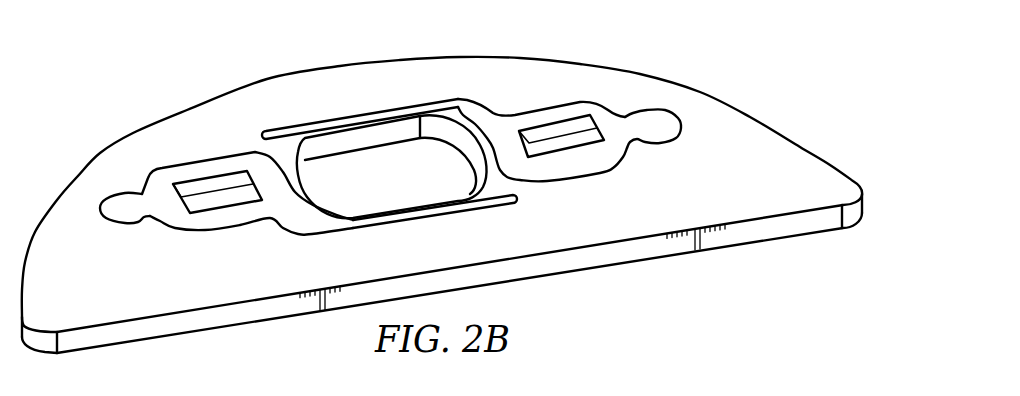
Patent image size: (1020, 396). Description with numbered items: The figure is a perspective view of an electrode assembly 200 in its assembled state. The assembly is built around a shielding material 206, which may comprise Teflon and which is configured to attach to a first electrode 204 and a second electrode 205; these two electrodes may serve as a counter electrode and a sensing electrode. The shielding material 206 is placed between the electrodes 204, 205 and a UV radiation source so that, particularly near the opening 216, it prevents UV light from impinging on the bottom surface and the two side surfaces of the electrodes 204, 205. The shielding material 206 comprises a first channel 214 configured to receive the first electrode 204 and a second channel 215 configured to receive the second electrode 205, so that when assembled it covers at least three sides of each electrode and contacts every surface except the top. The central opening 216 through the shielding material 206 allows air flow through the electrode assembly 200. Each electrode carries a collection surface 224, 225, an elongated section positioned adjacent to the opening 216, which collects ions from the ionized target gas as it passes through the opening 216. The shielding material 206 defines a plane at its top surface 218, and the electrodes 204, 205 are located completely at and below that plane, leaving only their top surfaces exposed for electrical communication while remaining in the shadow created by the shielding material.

The electrode assembly 200 is at (449, 195).
The first electrode 204 is at (118, 206).
The second electrode 205 is at (656, 127).
The shielding material 206 is at (217, 317).
The first channel 214 is at (243, 241).
The second channel 215 is at (601, 186).
The opening 216 is at (378, 146).
The top surface 218 is at (803, 161).
The collection surface 224 is at (464, 207).
The collection surface 225 is at (288, 131).